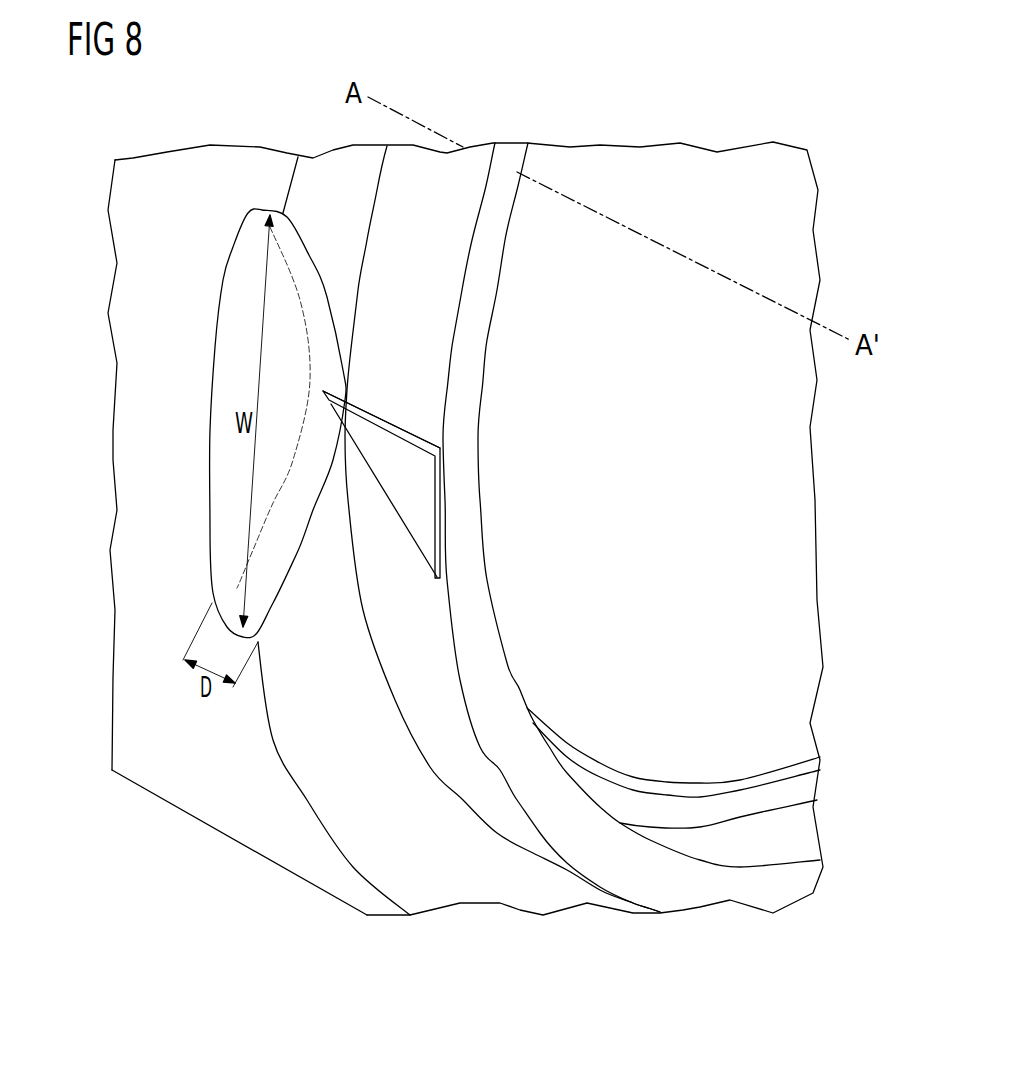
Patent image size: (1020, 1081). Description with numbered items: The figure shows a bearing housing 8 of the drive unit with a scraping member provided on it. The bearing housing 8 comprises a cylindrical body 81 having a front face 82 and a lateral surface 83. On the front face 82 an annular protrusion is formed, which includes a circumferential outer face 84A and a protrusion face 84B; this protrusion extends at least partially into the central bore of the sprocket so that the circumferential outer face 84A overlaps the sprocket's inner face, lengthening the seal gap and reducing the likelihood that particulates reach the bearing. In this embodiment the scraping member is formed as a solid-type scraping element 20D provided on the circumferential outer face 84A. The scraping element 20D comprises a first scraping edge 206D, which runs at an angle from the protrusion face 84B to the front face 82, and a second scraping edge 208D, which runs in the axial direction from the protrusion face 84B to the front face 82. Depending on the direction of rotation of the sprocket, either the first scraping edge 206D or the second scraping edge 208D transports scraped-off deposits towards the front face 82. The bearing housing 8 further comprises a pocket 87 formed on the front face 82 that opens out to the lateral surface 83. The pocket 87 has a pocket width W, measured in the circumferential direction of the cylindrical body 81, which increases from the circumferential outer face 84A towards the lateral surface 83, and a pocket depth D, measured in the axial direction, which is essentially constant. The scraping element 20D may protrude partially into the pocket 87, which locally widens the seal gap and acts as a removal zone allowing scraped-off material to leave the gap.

The bearing housing 8 is at (538, 132).
The cylindrical body 81 is at (198, 795).
The front face 82 is at (322, 753).
The lateral surface 83 is at (143, 510).
The circumferential outer face 84A is at (440, 633).
The protrusion face 84B is at (505, 700).
The pocket 87 is at (282, 543).
The scraping element 20D is at (432, 472).
The first scraping edge 206D is at (385, 503).
The second scraping edge 208D is at (380, 422).